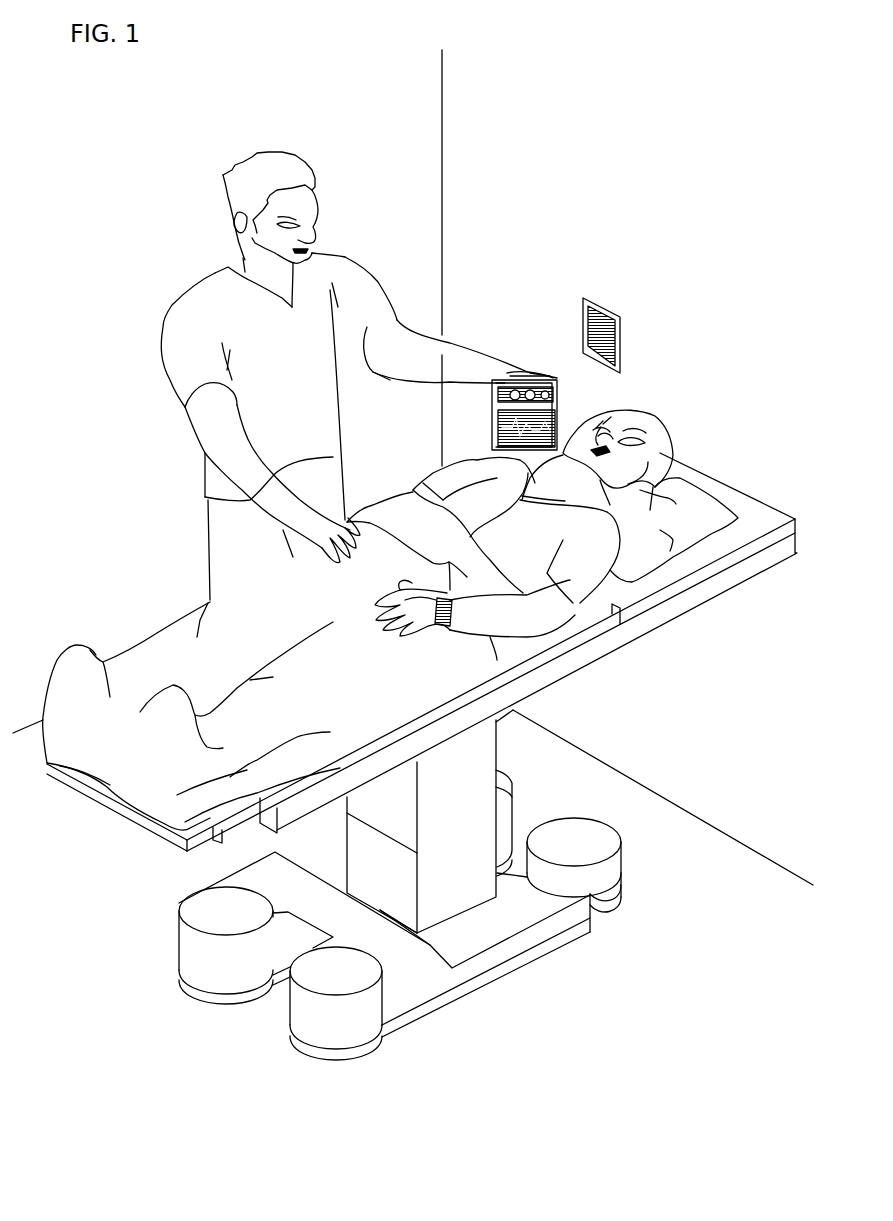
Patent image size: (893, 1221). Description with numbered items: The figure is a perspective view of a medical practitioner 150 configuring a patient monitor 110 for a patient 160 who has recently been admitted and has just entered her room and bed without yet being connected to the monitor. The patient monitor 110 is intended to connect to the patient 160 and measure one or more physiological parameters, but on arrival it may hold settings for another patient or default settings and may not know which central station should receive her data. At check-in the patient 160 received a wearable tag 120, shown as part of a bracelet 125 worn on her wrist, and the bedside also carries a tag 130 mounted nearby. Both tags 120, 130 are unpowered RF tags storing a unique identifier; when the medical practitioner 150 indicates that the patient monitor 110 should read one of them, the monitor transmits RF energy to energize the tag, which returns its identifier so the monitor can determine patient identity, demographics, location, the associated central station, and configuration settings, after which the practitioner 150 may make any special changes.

The patient monitor 110 is at (562, 384).
The wearable tag 120 is at (458, 622).
The bracelet 125 is at (438, 628).
The tag 130 is at (600, 300).
The medical practitioner 150 is at (278, 152).
The patient 160 is at (650, 413).